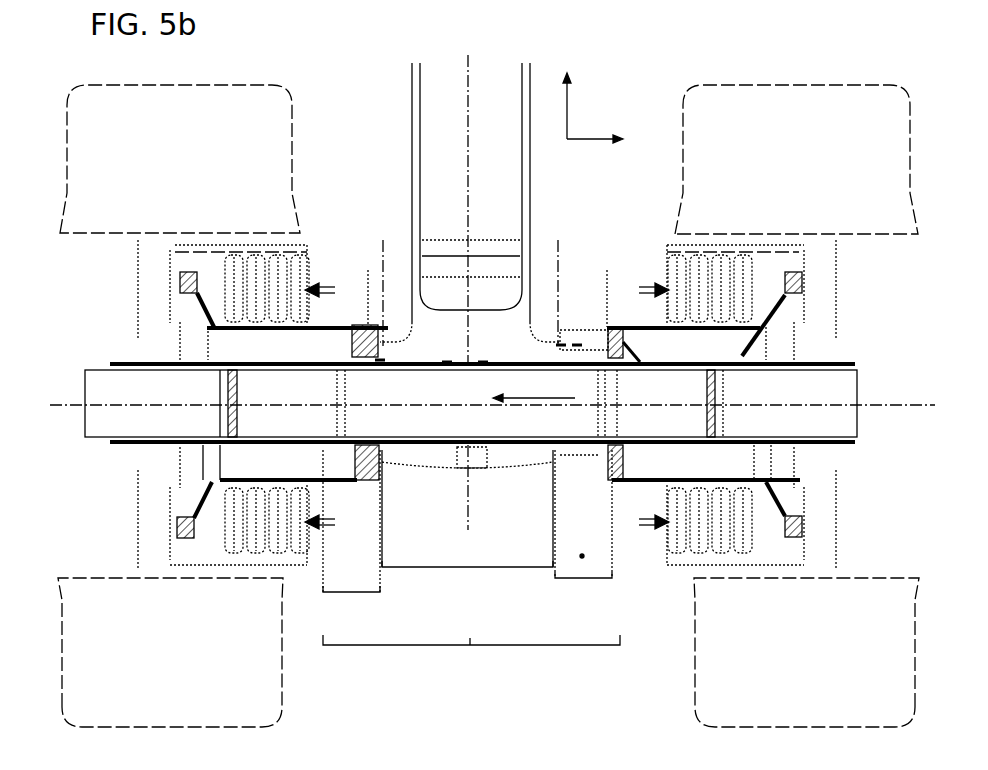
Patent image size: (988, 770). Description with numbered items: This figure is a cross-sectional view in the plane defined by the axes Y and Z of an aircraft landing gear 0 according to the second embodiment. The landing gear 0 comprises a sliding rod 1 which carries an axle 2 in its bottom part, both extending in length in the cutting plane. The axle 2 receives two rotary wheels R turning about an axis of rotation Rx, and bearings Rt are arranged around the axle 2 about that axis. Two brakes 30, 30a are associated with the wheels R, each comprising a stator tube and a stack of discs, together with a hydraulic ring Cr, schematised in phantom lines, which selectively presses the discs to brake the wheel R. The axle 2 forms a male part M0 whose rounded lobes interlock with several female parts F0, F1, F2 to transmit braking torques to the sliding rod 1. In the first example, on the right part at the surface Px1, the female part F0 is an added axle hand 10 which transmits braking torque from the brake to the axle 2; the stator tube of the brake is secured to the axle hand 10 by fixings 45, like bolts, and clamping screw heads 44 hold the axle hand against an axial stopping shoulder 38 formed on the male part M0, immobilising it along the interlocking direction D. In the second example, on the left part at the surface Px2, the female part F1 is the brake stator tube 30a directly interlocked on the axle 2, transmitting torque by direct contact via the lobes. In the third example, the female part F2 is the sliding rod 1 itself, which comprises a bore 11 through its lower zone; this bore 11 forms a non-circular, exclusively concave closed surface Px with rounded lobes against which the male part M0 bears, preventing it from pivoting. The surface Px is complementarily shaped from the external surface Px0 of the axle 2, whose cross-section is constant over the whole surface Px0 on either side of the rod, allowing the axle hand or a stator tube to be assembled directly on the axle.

The landing gear 0 is at (133, 80).
The wheel R is at (748, 85).
The female part F1 is at (380, 357).
The sliding rod 1 is at (420, 98).
The axis Z is at (581, 102).
The axis Y is at (596, 127).
The female part F2 is at (483, 362).
The axial stopping shoulder 38 is at (560, 343).
The brake 30 is at (692, 298).
The bore 11 is at (447, 360).
The male part M0 is at (363, 333).
The axle hand 10 is at (577, 343).
The female part F0 is at (597, 347).
The bearings Rt is at (740, 363).
The brake stator tube 30a is at (180, 302).
The axle 2 is at (837, 397).
The axis of rotation Rx is at (492, 394).
The fixings 45 is at (635, 458).
The screw heads 44 is at (573, 455).
The hydraulic ring Cr is at (582, 557).
The interlocking direction D is at (527, 398).
The non-circular surface Px is at (467, 584).
The surface Px1 is at (583, 593).
The surface Px2 is at (351, 607).
The external surface Px0 is at (471, 659).